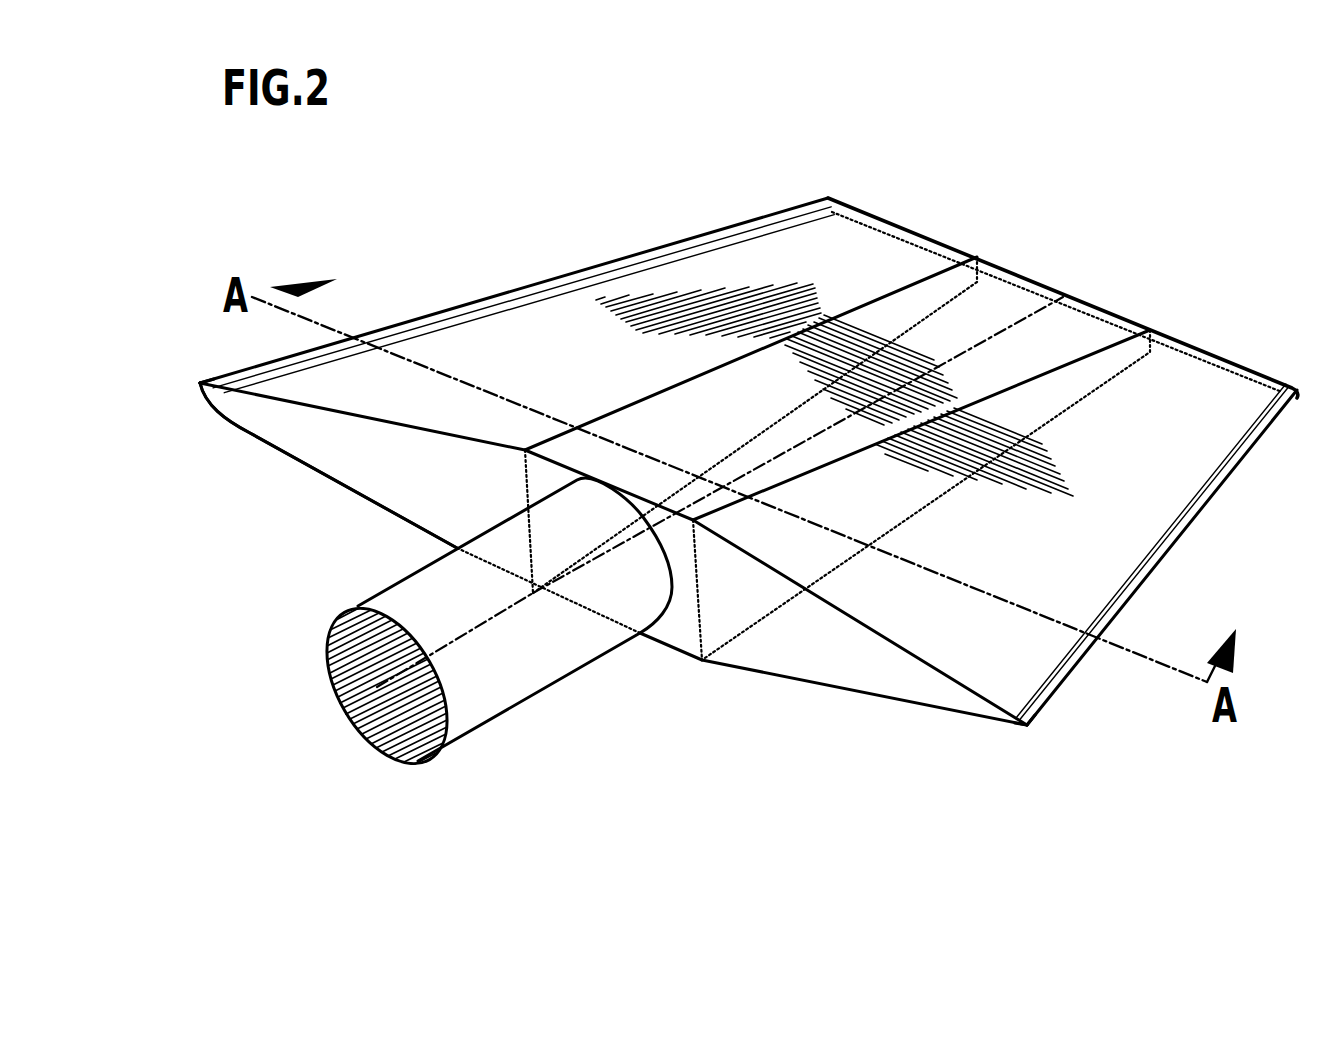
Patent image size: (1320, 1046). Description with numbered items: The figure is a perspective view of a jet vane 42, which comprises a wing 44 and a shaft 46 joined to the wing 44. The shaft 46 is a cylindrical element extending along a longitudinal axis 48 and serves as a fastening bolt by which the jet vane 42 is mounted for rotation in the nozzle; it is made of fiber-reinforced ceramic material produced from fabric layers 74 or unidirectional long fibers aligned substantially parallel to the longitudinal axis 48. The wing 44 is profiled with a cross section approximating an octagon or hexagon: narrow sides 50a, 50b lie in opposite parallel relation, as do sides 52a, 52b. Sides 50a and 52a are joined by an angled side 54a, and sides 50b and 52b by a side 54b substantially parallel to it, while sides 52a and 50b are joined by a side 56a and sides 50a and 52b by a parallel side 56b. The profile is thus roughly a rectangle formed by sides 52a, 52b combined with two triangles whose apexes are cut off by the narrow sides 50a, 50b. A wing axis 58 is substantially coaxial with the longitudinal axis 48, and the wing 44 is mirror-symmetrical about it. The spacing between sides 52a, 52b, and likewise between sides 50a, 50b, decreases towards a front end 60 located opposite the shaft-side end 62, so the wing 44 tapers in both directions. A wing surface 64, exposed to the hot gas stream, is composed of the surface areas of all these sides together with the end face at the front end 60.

The jet vane 42 is at (661, 204).
The wing 44 is at (566, 258).
The shaft 46 is at (525, 683).
The longitudinal axis of the shaft 48 is at (487, 613).
The narrow side 50a is at (200, 383).
The narrow side 50b is at (1027, 725).
The side 52a is at (575, 473).
The side 52b is at (655, 643).
The side 54a is at (402, 422).
The side 54b is at (815, 684).
The side 56a is at (860, 605).
The side 56b is at (243, 427).
The wing axis 58 is at (1017, 325).
The front end 60 is at (1182, 337).
The end 62 is at (360, 455).
The wing surface 64 is at (848, 244).
The fabric layers 74 is at (412, 728).